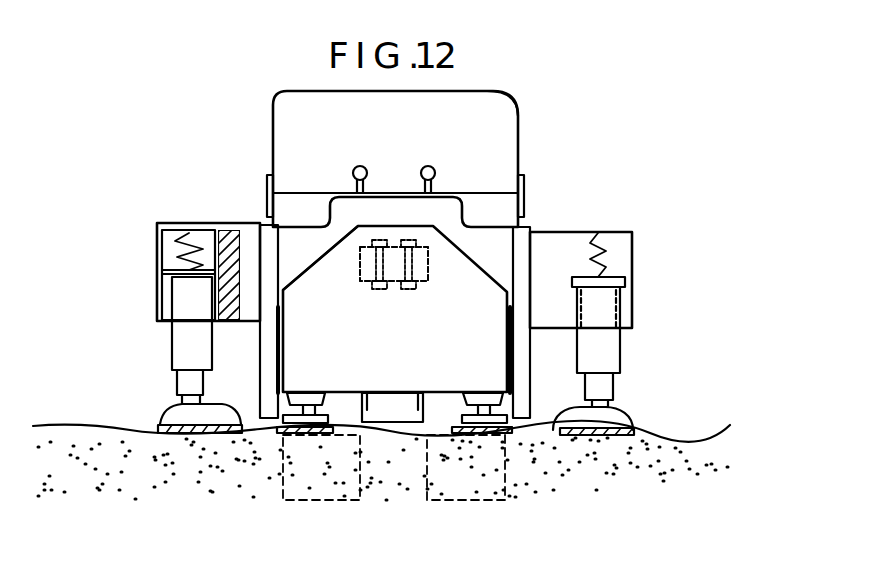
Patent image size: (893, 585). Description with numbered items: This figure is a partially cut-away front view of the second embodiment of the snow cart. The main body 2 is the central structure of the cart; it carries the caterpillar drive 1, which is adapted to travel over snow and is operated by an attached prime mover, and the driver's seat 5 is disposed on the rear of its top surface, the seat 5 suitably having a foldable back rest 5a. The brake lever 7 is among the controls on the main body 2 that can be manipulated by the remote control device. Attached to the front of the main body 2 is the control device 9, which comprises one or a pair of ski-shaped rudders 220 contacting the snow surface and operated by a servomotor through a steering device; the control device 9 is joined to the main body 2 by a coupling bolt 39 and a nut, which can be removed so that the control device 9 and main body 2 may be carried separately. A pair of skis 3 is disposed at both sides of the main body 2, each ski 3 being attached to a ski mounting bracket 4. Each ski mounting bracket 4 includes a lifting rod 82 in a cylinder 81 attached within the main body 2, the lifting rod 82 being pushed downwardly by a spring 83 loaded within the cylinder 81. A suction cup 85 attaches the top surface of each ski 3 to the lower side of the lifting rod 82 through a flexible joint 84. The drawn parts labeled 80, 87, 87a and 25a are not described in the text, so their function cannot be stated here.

The caterpillar drive 1 is at (333, 475).
The main body 2 is at (522, 262).
The ski 3 is at (283, 440).
The ski mounting bracket 4 is at (150, 262).
The seat 5 is at (268, 143).
The foldable back rest 5a is at (502, 112).
The brake lever 7 is at (362, 165).
The control device 9 is at (290, 262).
The mounting bracket 25a is at (428, 262).
The coupling bolt 39 is at (410, 290).
The bolt 80 is at (429, 165).
The cylinder 81 is at (175, 226).
The lifting rod 82 is at (182, 288).
The spring 83 is at (160, 250).
The flexible joint 84 is at (178, 380).
The suction cup 85 is at (170, 422).
The support wheel 87 is at (238, 436).
The foot pad 87a is at (180, 405).
The ski-shaped rudder 220 is at (182, 435).